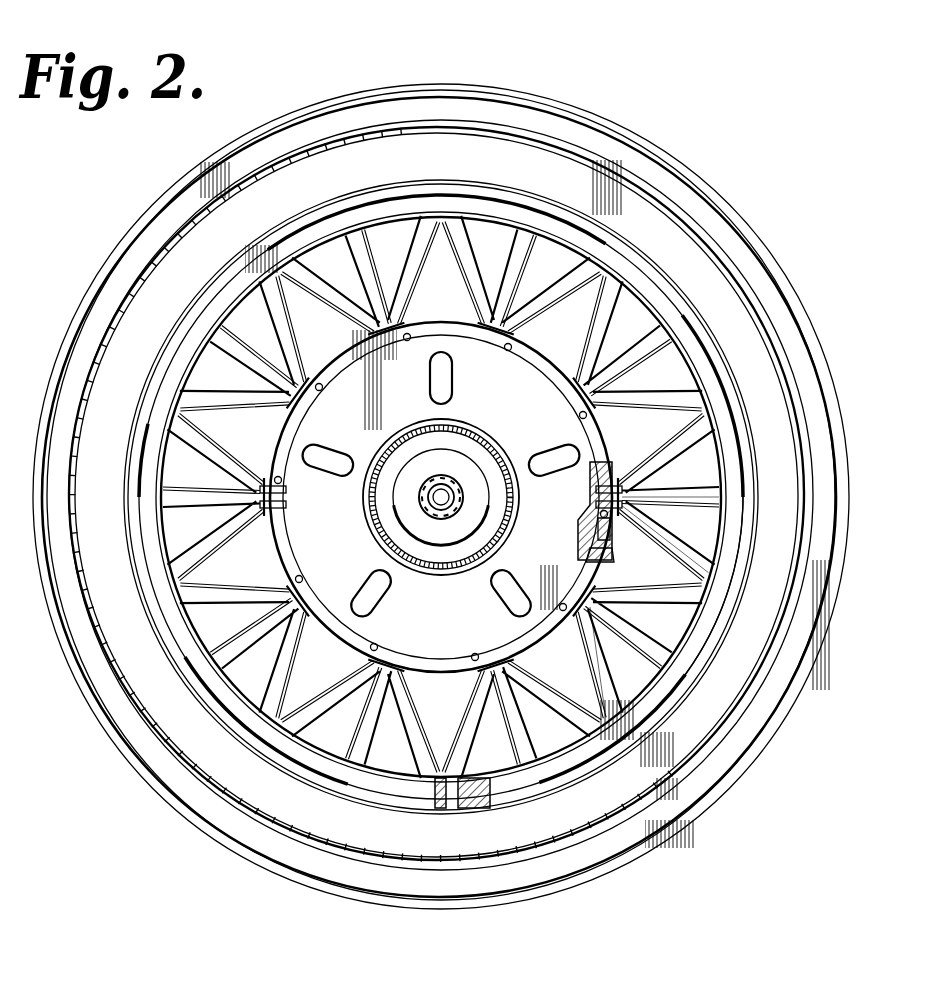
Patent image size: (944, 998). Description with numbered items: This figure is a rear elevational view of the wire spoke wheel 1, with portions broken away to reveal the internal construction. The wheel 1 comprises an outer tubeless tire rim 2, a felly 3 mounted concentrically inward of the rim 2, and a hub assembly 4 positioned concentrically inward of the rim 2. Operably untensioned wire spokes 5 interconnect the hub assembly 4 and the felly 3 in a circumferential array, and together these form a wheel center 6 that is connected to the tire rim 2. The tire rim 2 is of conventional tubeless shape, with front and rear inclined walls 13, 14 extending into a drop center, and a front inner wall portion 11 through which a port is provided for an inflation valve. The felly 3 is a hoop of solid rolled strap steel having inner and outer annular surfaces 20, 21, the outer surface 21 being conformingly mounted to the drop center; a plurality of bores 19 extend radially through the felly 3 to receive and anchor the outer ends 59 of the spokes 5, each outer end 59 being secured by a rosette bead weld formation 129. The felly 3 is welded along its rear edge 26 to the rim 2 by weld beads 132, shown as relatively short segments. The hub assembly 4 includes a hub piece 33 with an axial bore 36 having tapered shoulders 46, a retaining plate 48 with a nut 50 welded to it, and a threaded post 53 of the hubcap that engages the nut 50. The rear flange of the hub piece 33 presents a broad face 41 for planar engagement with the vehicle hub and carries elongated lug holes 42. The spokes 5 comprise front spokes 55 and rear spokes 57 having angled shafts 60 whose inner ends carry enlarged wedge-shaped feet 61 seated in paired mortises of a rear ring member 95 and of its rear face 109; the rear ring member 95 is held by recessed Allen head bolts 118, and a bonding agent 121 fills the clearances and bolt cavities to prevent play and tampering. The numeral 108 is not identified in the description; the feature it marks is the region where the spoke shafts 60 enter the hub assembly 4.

The wire spoke wheel 1 is at (655, 140).
The outer tubeless tire rim 2 is at (746, 240).
The felly 3 is at (668, 292).
The hub assembly 4 is at (465, 352).
The wire spokes 5 is at (232, 497).
The wheel center 6 is at (217, 295).
The front inner wall portion 11 is at (742, 696).
The front inclined wall 13 is at (752, 662).
The rear inclined wall 14 is at (262, 650).
The bores 19 is at (453, 800).
The inner annular surface 20 is at (592, 286).
The outer annular surface 21 is at (632, 265).
The rear edge 26 is at (728, 600).
The hub piece 33 is at (347, 376).
The axial bore 36 is at (482, 452).
The broad face 41 is at (578, 432).
The elongated lug holes 42 is at (372, 600).
The tapered shoulders 46 is at (463, 563).
The retaining plate 48 is at (471, 433).
The nut 50 is at (430, 493).
The threaded post 53 is at (437, 500).
The front spokes 55 is at (707, 492).
The rear spokes 57 is at (673, 523).
The outer ends 59 is at (584, 736).
The angled shafts 60 is at (619, 524).
The feet 61 is at (577, 513).
The rear ring member 95 is at (448, 672).
The spoke tab 108 is at (609, 467).
The rear face 109 is at (606, 560).
The recessed Allen head bolts 118 is at (367, 650).
The bonding agent 121 is at (474, 656).
The bead weld formation 129 is at (447, 808).
The weld beads 132 is at (449, 198).